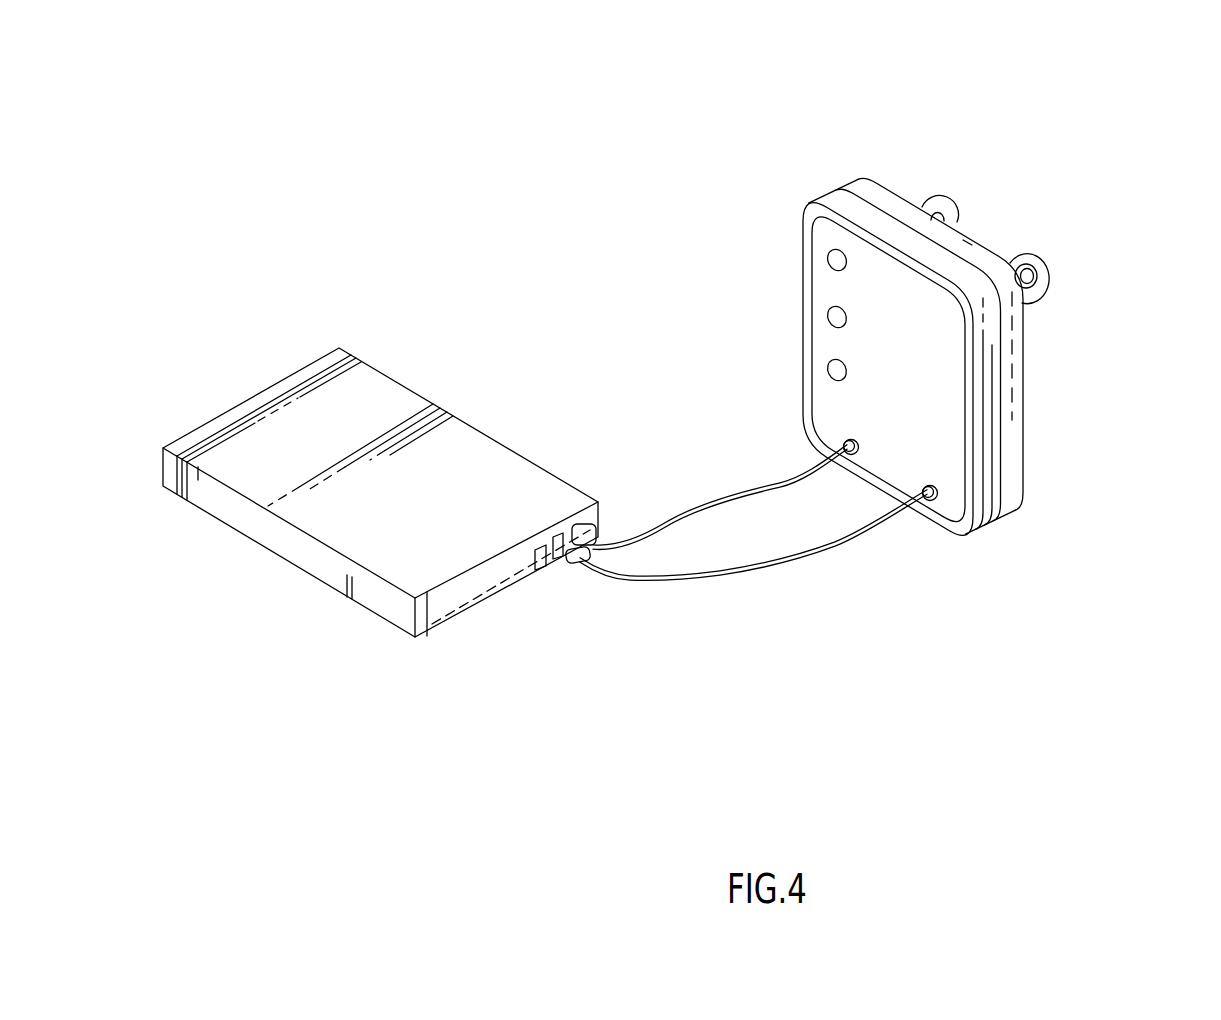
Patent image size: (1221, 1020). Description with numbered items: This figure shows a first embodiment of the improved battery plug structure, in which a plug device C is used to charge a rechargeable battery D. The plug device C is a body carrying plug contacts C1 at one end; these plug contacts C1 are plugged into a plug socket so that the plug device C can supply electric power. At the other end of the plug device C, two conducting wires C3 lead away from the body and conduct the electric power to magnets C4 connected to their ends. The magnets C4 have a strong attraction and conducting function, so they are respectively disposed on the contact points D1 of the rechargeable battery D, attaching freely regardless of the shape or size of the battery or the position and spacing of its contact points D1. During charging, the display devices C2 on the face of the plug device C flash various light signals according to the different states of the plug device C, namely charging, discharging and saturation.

The plug device C is at (918, 378).
The plug contacts C1 is at (1027, 263).
The display devices C2 is at (833, 258).
The conducting wires C3 is at (765, 572).
The magnets C4 is at (578, 530).
The rechargeable battery D is at (320, 405).
The contact points D1 is at (540, 563).